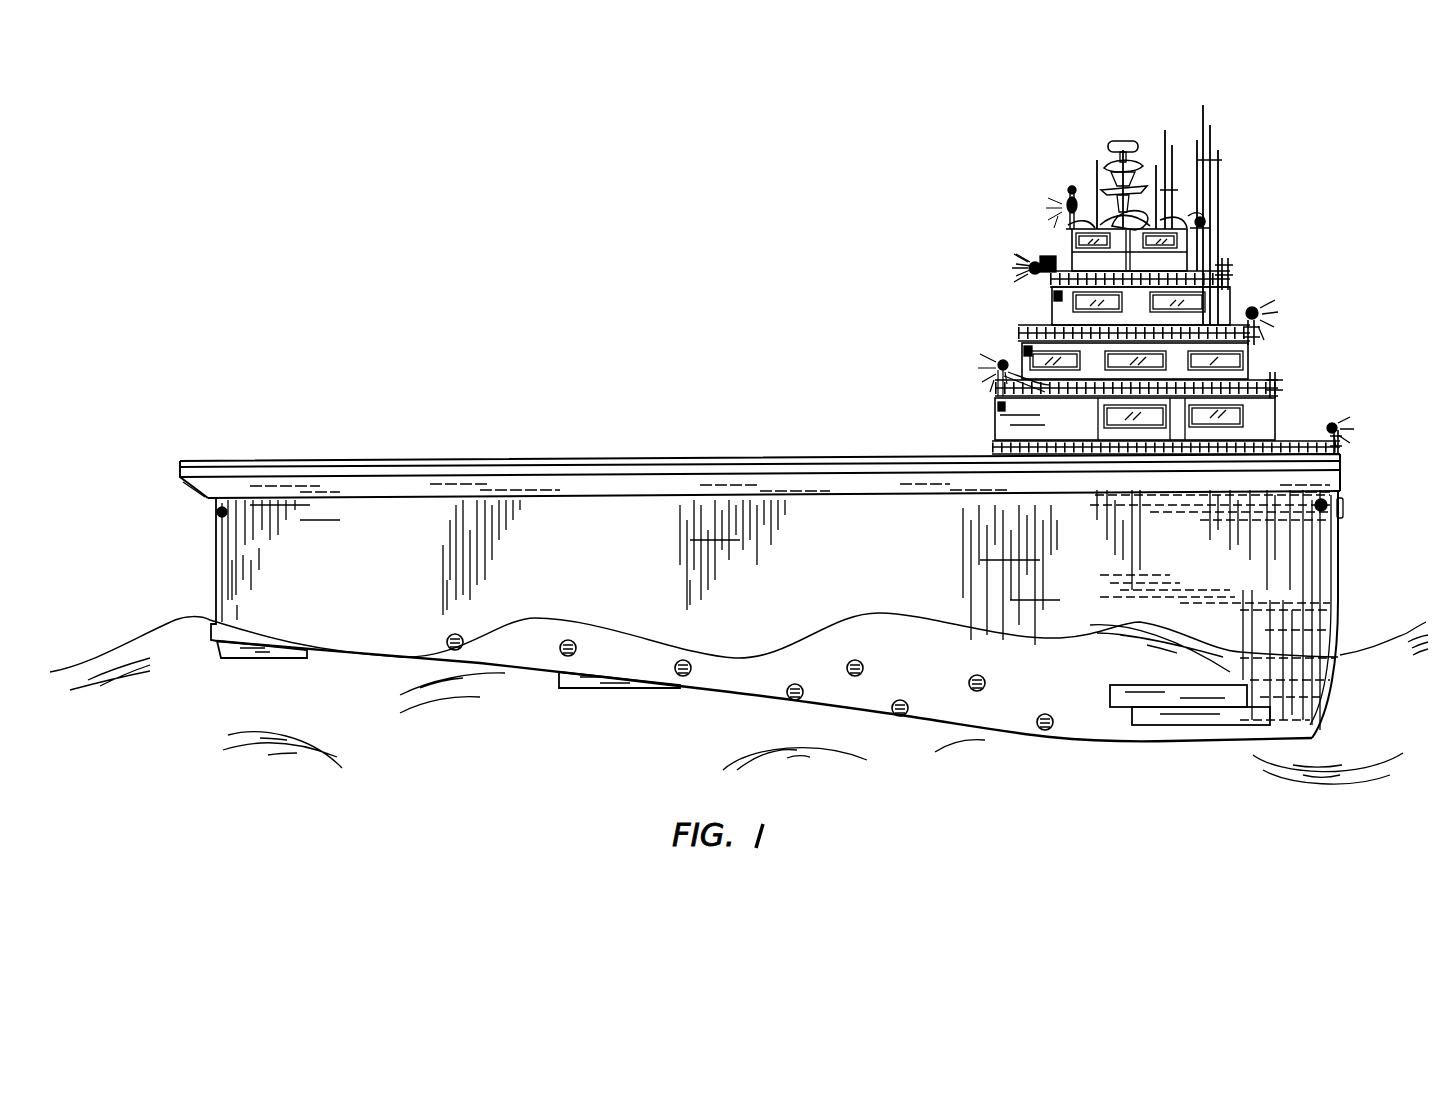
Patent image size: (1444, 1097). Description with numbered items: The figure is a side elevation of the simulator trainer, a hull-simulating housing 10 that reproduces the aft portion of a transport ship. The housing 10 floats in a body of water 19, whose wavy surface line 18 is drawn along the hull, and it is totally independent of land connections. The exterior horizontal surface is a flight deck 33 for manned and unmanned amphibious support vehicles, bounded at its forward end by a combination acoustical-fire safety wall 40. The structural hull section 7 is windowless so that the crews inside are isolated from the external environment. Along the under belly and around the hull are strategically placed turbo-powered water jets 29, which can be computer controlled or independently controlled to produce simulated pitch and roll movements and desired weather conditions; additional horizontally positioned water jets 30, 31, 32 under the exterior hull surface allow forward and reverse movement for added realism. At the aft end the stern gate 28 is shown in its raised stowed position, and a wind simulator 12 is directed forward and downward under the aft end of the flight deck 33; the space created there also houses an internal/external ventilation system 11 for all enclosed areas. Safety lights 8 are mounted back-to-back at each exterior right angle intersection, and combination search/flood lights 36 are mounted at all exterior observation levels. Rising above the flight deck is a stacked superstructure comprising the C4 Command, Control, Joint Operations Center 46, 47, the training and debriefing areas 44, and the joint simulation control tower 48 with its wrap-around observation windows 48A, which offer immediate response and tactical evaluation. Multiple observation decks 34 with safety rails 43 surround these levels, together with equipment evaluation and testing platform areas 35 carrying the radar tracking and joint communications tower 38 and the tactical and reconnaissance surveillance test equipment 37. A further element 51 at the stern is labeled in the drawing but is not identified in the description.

The structural hull section 7 is at (320, 589).
The safety lights 8 is at (1068, 196).
The housing 10 is at (455, 456).
The internal/external ventilation system 11 is at (297, 480).
The wind simulator 12 is at (186, 479).
The wavy surface line 18 is at (100, 662).
The body of water 19 is at (458, 756).
The stern gate 28 is at (215, 581).
The turbo-powered water jets 29 is at (677, 661).
The turbo-powered water jet 30 is at (260, 658).
The turbo-powered water jet 31 is at (640, 688).
The turbo-powered water jet 32 is at (1215, 727).
The flight deck 33 is at (638, 460).
The observation decks 34 is at (1222, 258).
The equipment evaluation and testing platform areas 35 is at (1045, 260).
The combination search/flood lights 36 is at (1206, 224).
The tactical and reconnaissance surveillance test equipment 37 is at (1218, 198).
The radar tracking and joint communications tower 38 is at (1118, 142).
The combination acoustical-fire safety wall 40 is at (996, 436).
The safety rails 43 is at (1040, 280).
The training and debriefing areas 44 is at (997, 416).
The Command, Control, Joint Operations Center 46 is at (1022, 362).
The Command, Control, Joint Operations Center 47 is at (1052, 312).
The joint simulation control tower 48 is at (1070, 252).
The wrap-around observation windows 48A is at (1066, 230).
The stern light 51 is at (1344, 511).